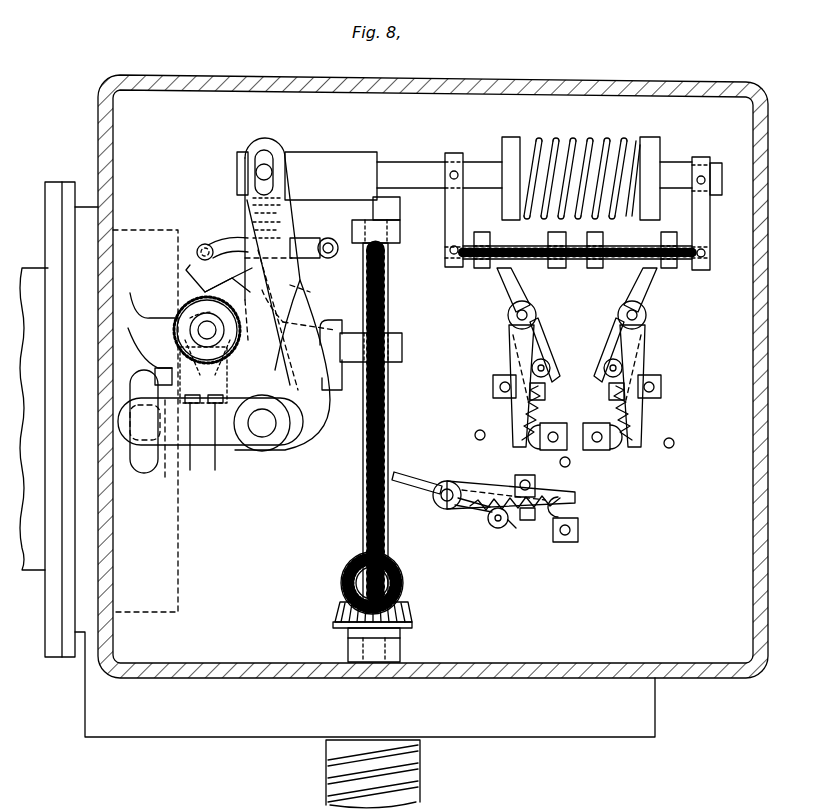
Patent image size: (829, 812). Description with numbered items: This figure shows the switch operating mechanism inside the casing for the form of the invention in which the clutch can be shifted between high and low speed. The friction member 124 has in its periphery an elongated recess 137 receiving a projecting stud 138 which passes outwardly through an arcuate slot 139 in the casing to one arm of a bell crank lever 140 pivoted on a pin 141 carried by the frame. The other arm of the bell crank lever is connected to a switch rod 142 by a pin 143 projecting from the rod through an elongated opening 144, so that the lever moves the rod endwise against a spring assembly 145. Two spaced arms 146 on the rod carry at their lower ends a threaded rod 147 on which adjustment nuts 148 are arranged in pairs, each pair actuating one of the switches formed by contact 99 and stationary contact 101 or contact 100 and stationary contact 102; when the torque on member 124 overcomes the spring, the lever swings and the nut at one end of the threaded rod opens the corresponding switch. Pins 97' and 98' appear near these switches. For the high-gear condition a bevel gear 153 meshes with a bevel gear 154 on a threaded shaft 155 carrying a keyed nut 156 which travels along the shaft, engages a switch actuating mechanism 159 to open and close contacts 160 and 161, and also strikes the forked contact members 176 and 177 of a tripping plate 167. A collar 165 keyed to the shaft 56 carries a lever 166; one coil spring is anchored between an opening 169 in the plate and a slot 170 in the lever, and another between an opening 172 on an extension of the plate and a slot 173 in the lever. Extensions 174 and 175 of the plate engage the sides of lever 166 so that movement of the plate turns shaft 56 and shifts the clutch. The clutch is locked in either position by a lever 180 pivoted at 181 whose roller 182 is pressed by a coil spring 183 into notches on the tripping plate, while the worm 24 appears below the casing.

The worm 24 is at (422, 764).
The shaft 56 is at (193, 302).
The pin 97' is at (686, 448).
The pin 98' is at (497, 446).
The contact 99 is at (624, 442).
The contact 100 is at (533, 445).
The stationary contact 101 is at (598, 450).
The stationary contact 102 is at (563, 432).
The friction member 124 is at (182, 597).
The elongated recess 137 is at (171, 446).
The projecting stud 138 is at (138, 434).
The arcuate slot 139 is at (210, 458).
The bell crank lever 140 is at (305, 413).
The pin 141 is at (268, 425).
The switch rod 142 is at (418, 160).
The pin 143 is at (262, 166).
The elongated opening 144 is at (255, 187).
The spring assembly 145 is at (622, 139).
The arms 146 is at (446, 213).
The threaded rod 147 is at (683, 266).
The adjustment nuts 148 is at (480, 270).
The bevel gear 153 is at (404, 587).
The bevel gear 154 is at (408, 618).
The threaded shaft 155 is at (364, 525).
The nut 156 is at (402, 350).
The switch actuating mechanism 159 is at (508, 530).
The contact 160 is at (580, 509).
The contact 161 is at (580, 531).
The collar 165 is at (250, 270).
The lever 166 is at (243, 412).
The tripping plate 167 is at (187, 268).
The opening 169 is at (277, 306).
The slot 170 is at (213, 405).
The opening 172 is at (144, 319).
The slot 173 is at (215, 445).
The extension 174 is at (157, 375).
The extension 175 is at (250, 392).
The contact member 176 is at (348, 318).
The contact member 177 is at (326, 392).
The lever 180 is at (232, 240).
The pivot 181 is at (328, 240).
The roller 182 is at (201, 246).
The coil spring 183 is at (300, 215).